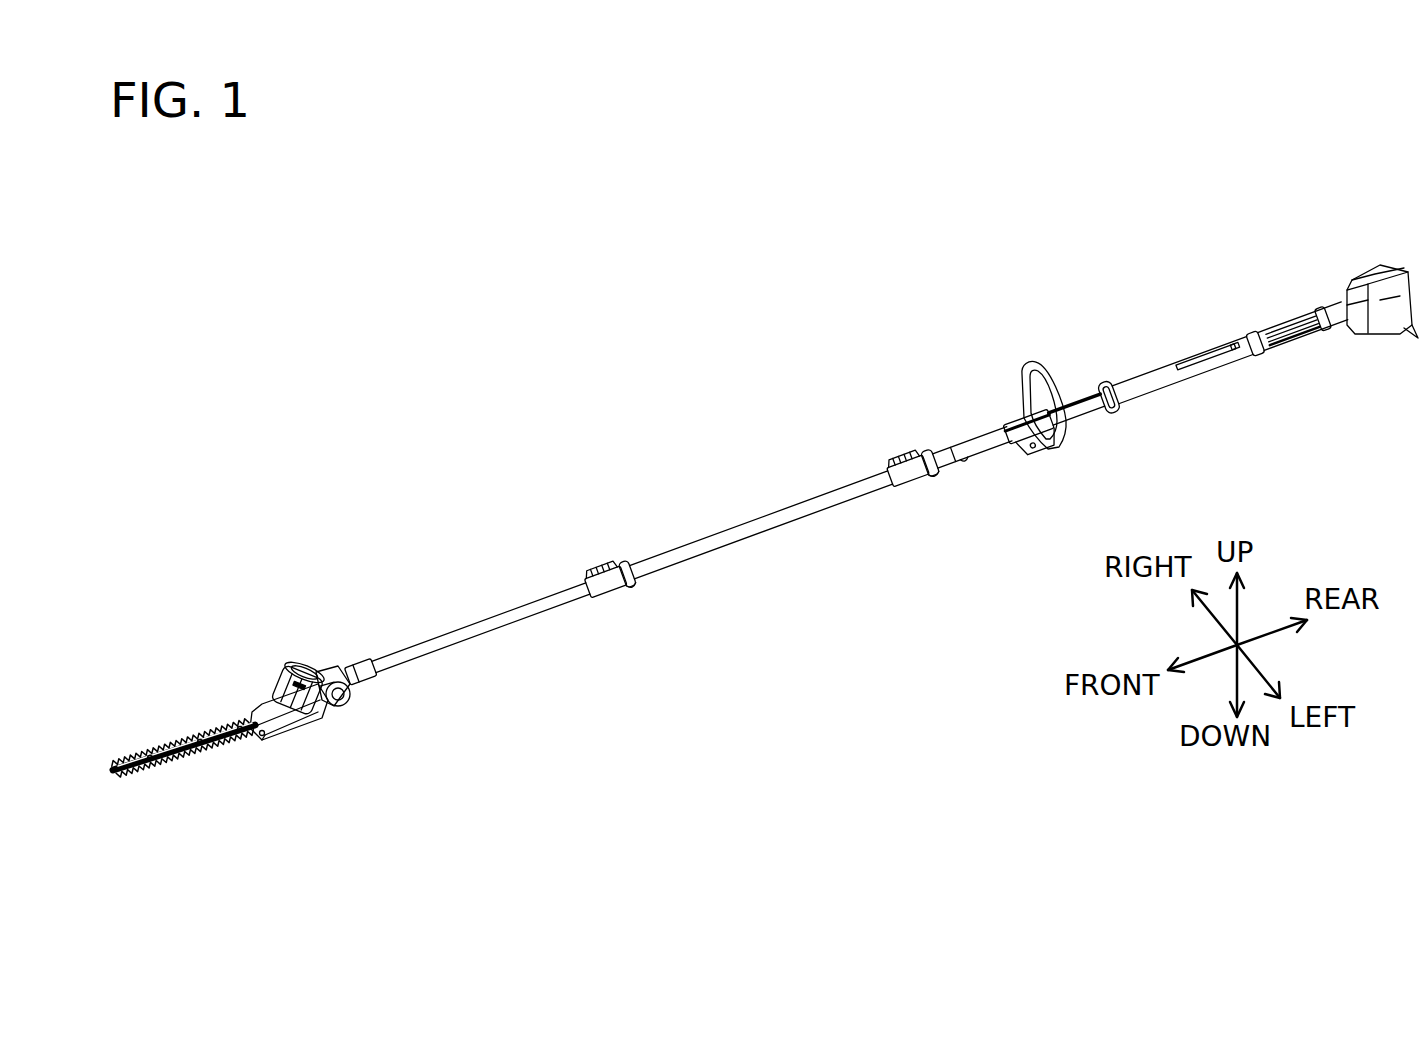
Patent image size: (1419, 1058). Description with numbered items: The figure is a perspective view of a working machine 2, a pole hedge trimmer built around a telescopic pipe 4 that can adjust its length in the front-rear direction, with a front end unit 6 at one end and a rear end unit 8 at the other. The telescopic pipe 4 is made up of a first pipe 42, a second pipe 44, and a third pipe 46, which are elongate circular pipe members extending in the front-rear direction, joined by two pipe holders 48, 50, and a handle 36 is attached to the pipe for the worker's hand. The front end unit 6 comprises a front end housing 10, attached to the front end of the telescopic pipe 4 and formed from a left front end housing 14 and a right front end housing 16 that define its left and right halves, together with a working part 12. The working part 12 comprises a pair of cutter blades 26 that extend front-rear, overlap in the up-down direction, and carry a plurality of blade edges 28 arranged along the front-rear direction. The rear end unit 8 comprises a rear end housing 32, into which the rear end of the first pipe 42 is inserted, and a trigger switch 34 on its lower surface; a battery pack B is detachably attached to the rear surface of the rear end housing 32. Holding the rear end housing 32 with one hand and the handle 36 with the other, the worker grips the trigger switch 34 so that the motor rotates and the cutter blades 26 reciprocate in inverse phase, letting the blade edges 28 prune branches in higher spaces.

The working machine 2 is at (413, 398).
The telescopic pipe 4 is at (672, 530).
The front end unit 6 is at (245, 668).
The rear end unit 8 is at (1288, 300).
The front end housing 10 is at (290, 735).
The working part 12 is at (157, 723).
The left front end housing 14 is at (310, 714).
The right front end housing 16 is at (295, 672).
The cutter blades 26 is at (172, 770).
The blade edges 28 is at (136, 782).
The rear end housing 32 is at (1303, 326).
The trigger switch 34 is at (1322, 318).
The handle 36 is at (1027, 368).
The first pipe 42 is at (1182, 370).
The second pipe 44 is at (821, 504).
The third pipe 46 is at (467, 632).
The pipe holder 48 is at (912, 468).
The pipe holder 50 is at (609, 578).
The battery pack B is at (1388, 272).